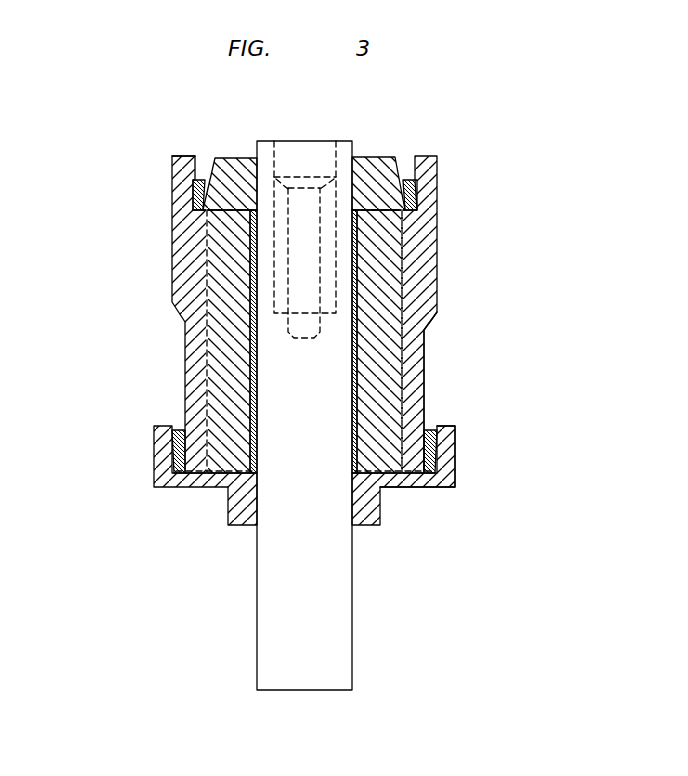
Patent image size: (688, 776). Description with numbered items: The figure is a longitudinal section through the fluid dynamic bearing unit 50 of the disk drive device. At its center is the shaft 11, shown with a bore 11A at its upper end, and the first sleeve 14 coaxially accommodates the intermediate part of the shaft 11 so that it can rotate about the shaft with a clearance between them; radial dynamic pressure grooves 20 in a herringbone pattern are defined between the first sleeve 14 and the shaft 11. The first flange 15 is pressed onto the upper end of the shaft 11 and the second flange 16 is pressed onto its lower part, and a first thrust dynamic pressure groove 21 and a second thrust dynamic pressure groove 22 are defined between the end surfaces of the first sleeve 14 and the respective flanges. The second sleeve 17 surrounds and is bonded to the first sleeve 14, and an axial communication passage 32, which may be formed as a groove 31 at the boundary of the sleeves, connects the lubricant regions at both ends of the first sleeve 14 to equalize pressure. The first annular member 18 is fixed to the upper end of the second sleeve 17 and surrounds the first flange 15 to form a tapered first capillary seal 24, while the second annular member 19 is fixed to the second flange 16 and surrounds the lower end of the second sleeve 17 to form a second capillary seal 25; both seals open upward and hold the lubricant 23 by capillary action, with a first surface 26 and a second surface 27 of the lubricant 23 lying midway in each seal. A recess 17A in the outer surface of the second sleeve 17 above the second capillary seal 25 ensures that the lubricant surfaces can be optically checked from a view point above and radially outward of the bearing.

The shaft 11 is at (343, 677).
The threaded bore of shaft 11A is at (305, 190).
The first sleeve 14 is at (230, 326).
The first flange 15 is at (232, 158).
The second flange 16 is at (402, 488).
The second sleeve 17 is at (182, 281).
The recess 17A is at (424, 374).
The first annular member 18 is at (431, 177).
The second annular member 19 is at (440, 439).
The radial dynamic pressure grooves 20 is at (207, 256).
The first thrust dynamic pressure groove 21 is at (405, 229).
The second thrust dynamic pressure groove 22 is at (221, 488).
The lubricant 23 is at (172, 190).
The first capillary seal 24 is at (200, 178).
The second capillary seal 25 is at (176, 428).
The first surface of the lubricant 26 is at (409, 180).
The second surface of the lubricant 27 is at (432, 430).
The axially-extending groove 31 is at (405, 343).
The communication passage 32 is at (354, 341).
The fluid dynamic bearing unit 50 is at (136, 497).